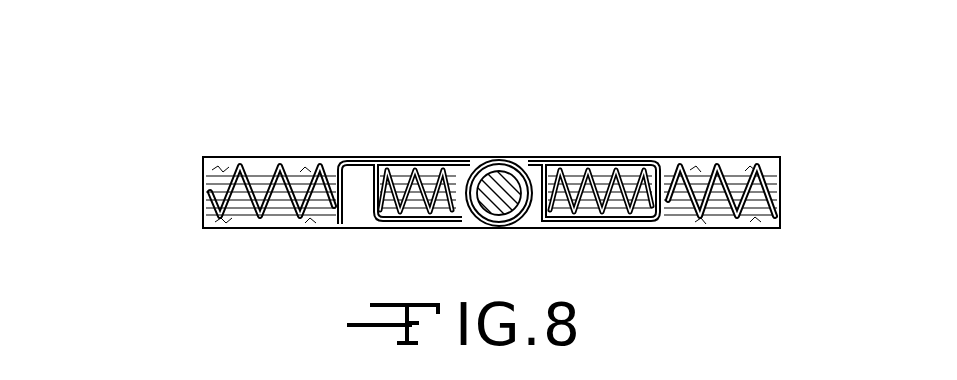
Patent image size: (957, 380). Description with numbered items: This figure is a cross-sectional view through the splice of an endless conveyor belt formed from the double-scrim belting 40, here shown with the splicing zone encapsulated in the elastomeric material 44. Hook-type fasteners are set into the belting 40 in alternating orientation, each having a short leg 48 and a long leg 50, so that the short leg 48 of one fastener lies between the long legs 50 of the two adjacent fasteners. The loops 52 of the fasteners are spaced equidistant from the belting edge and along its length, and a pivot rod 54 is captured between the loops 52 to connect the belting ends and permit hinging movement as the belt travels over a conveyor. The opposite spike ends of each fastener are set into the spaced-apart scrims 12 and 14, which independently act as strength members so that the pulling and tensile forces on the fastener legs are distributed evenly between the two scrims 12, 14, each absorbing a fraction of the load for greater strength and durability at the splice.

The belting 40 is at (270, 148).
The scrim 12 is at (190, 183).
The scrim 14 is at (190, 207).
The elastomeric material 44 is at (735, 157).
The short leg 48 is at (576, 158).
The long leg 50 is at (393, 158).
The loop 52 is at (503, 157).
The pivot rod 54 is at (510, 212).